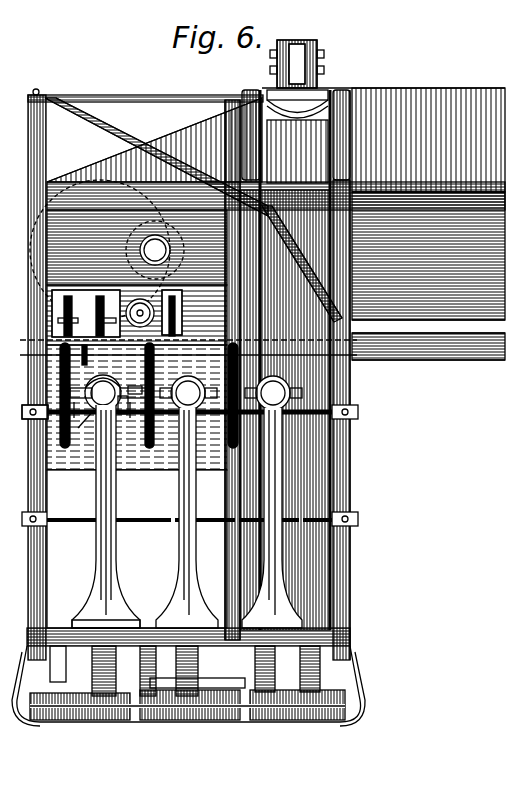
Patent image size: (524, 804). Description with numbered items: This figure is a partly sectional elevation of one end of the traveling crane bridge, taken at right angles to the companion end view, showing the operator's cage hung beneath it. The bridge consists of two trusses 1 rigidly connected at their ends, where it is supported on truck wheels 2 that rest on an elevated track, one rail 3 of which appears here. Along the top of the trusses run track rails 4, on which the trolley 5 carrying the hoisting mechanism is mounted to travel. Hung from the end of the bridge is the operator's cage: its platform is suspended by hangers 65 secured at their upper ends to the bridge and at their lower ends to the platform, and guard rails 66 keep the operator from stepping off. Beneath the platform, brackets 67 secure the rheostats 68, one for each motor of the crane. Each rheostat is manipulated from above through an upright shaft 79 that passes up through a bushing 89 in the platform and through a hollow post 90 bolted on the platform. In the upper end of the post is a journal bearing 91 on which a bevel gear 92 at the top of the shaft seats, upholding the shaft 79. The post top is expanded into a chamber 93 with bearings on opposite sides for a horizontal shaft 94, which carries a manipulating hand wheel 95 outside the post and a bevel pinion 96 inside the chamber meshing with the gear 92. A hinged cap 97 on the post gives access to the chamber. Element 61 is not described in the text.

The truss 1 is at (392, 126).
The truck wheel 2 is at (276, 140).
The rail 3 is at (434, 352).
The track rail 4 is at (320, 64).
The trolley 5 is at (34, 484).
The bracket 61 is at (0, 72).
The hanger 65 is at (352, 480).
The guard rail 66 is at (340, 400).
The bracket 67 is at (358, 692).
The rheostat 68 is at (80, 722).
The upright shaft 79 is at (120, 505).
The bushing 89 is at (84, 612).
The hollow post 90 is at (294, 560).
The journal bearing 91 is at (94, 430).
The bevel gear 92 is at (114, 430).
The chamber 93 is at (109, 368).
The horizontal shaft 94 is at (84, 426).
The manipulating hand wheel 95 is at (40, 384).
The bevel pinion 96 is at (120, 428).
The hinged cap 97 is at (96, 355).